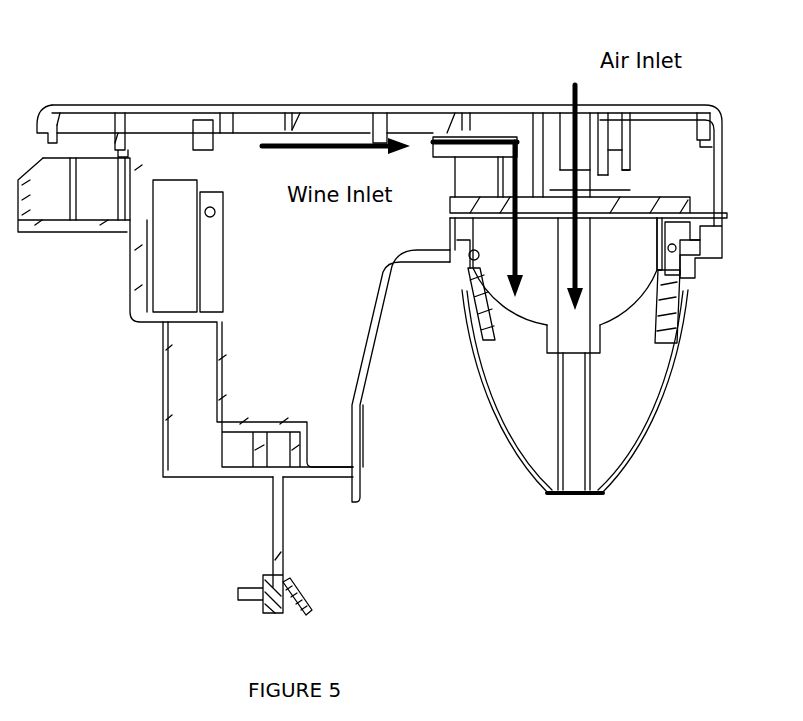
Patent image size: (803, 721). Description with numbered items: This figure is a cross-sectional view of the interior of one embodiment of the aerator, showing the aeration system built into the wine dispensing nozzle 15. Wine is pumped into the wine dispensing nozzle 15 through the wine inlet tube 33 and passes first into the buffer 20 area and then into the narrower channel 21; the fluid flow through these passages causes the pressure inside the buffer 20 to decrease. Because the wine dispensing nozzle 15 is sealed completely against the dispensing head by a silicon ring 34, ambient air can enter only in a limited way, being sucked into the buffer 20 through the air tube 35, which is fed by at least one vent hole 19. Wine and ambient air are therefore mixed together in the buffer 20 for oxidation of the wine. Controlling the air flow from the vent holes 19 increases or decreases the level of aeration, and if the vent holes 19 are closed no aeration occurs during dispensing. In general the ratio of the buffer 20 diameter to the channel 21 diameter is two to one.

The wine dispensing nozzle 15 is at (645, 455).
The vent holes 19 is at (542, 102).
The buffer 20 is at (612, 345).
The channel 21 is at (540, 426).
The wine inlet tube 33 is at (431, 130).
The silicon ring 34 is at (643, 200).
The air tube 35 is at (487, 258).